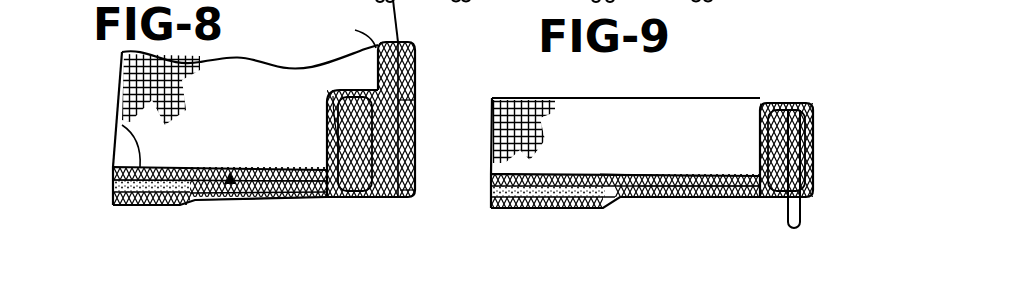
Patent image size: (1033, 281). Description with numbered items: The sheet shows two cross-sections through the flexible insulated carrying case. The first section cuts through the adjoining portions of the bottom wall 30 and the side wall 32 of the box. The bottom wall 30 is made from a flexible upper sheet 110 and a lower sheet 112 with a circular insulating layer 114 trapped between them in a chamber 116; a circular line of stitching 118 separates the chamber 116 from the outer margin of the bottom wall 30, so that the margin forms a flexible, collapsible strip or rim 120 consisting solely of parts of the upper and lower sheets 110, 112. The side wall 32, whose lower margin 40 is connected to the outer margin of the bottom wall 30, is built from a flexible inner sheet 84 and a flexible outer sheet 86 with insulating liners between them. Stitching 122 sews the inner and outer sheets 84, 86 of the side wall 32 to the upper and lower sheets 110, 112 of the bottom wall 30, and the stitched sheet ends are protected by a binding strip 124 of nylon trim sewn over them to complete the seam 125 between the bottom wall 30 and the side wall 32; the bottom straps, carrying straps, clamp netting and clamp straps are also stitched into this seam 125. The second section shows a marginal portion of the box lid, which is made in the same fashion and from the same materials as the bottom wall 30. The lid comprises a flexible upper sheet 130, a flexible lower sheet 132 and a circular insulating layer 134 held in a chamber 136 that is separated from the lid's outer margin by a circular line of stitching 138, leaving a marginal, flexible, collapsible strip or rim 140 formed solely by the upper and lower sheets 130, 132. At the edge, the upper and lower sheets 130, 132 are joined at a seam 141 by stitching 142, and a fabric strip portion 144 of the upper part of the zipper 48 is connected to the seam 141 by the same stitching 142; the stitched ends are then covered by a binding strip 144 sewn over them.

In FIG. 8, the bottom wall 30 is at (311, 202).
In FIG. 8, the side wall 32 is at (428, 75).
In FIG. 8, the lower margin 40 is at (417, 172).
In FIG. 9, the zipper 48 is at (802, 217).
In FIG. 8, the inner sheet 84 is at (356, 31).
In FIG. 8, the outer sheet 86 is at (419, 48).
In FIG. 8, the upper sheet 110 is at (121, 134).
In FIG. 8, the lower sheet 112 is at (193, 200).
In FIG. 8, the insulating layer 114 is at (113, 187).
In FIG. 8, the chamber 116 is at (202, 164).
In FIG. 8, the line of stitching 118 is at (248, 175).
In FIG. 8, the collapsible strip or rim 120 is at (283, 160).
In FIG. 8, the stitching 122 is at (340, 94).
In FIG. 8, the binding strip 124 is at (415, 107).
In FIG. 8, the seam 125 is at (368, 213).
In FIG. 9, the upper sheet 130 is at (537, 210).
In FIG. 9, the lower sheet 132 is at (684, 174).
In FIG. 9, the insulating layer 134 is at (572, 208).
In FIG. 9, the chamber 136 is at (607, 174).
In FIG. 9, the line of stitching 138 is at (643, 174).
In FIG. 9, the collapsible strip or rim 140 is at (725, 165).
In FIG. 9, the seam 141 is at (777, 213).
In FIG. 9, the stitching 142 is at (805, 100).
In FIG. 9, the fabric strip portion / binding strip 144 is at (787, 100).